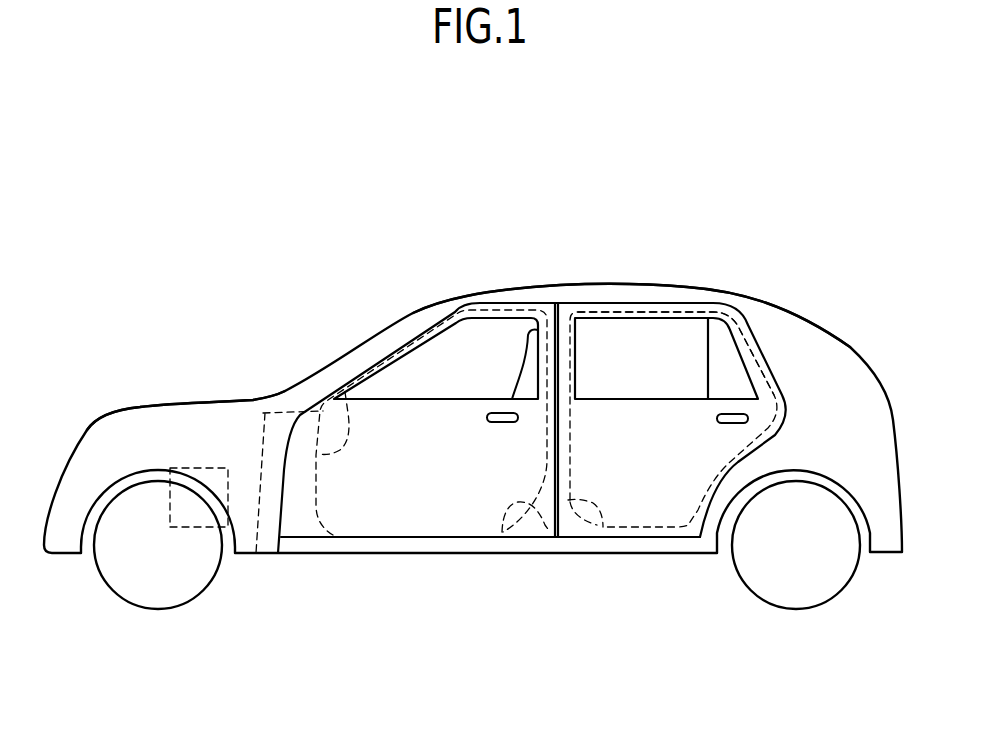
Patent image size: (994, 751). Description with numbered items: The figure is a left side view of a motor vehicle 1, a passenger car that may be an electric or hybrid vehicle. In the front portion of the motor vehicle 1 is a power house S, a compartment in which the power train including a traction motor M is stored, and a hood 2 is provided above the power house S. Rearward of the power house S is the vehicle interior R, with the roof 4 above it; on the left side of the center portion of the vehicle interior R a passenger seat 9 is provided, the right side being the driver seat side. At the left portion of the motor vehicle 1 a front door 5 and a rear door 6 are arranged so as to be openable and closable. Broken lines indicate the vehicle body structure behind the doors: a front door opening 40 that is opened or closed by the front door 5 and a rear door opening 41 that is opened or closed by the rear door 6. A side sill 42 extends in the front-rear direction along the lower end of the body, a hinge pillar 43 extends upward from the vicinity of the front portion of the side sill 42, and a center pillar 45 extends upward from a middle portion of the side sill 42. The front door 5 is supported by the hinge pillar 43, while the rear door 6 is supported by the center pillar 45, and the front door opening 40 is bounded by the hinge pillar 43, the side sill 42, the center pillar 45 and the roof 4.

The motor vehicle 1 is at (687, 288).
The hood 2 is at (138, 405).
The roof 4 is at (450, 295).
The front door 5 is at (385, 523).
The rear door 6 is at (662, 513).
The passenger seat 9 is at (528, 308).
The front door opening 40 is at (502, 532).
The rear door opening 41 is at (598, 530).
The side sill 42 is at (323, 547).
The hinge pillar 43 is at (345, 392).
The center pillar 45 is at (573, 368).
The power house S is at (213, 433).
The traction motor M is at (197, 527).
The vehicle interior R is at (497, 340).